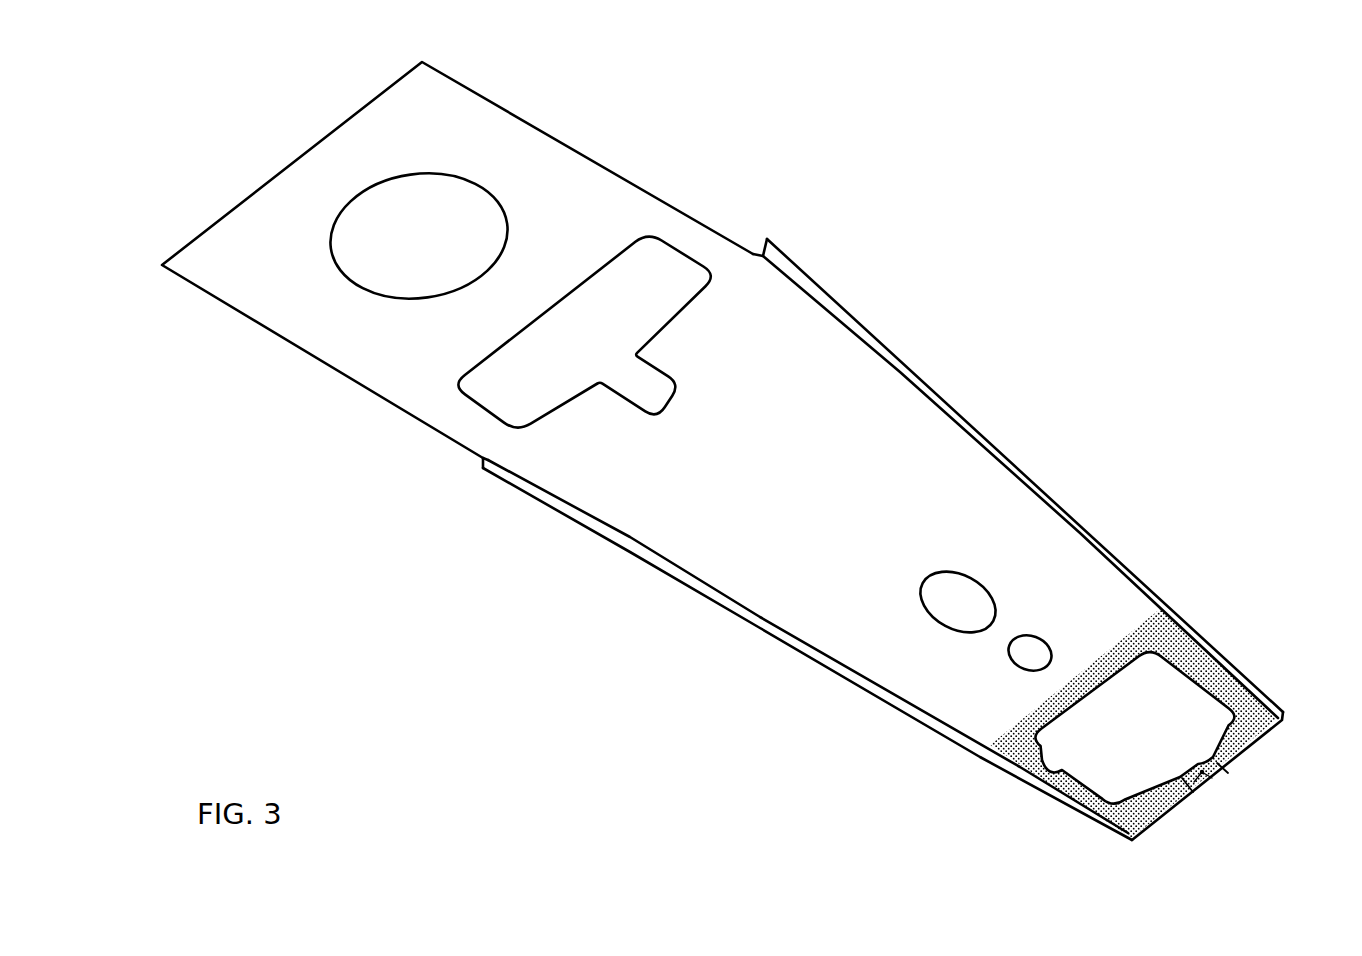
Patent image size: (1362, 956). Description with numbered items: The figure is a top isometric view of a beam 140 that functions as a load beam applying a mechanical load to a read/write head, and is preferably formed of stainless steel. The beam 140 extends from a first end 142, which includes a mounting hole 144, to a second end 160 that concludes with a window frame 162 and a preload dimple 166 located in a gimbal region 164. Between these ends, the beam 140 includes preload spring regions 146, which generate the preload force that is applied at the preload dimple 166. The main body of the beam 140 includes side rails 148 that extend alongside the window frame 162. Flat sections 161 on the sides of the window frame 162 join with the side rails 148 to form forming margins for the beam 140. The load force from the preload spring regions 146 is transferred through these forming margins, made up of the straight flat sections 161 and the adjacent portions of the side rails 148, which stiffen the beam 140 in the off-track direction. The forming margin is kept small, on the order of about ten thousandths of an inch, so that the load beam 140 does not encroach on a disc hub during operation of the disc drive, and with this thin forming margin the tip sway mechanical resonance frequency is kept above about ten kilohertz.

The beam 140 is at (1066, 152).
The first end 142 is at (492, 71).
The mounting hole 144 is at (417, 176).
The preload spring regions 146 is at (697, 232).
The side rails 148 is at (1105, 545).
The second end 160 is at (1213, 393).
The flat sections 161 is at (1217, 675).
The window frame 162 is at (1135, 643).
The gimbal region 164 is at (1254, 774).
The preload dimple 166 is at (1205, 778).